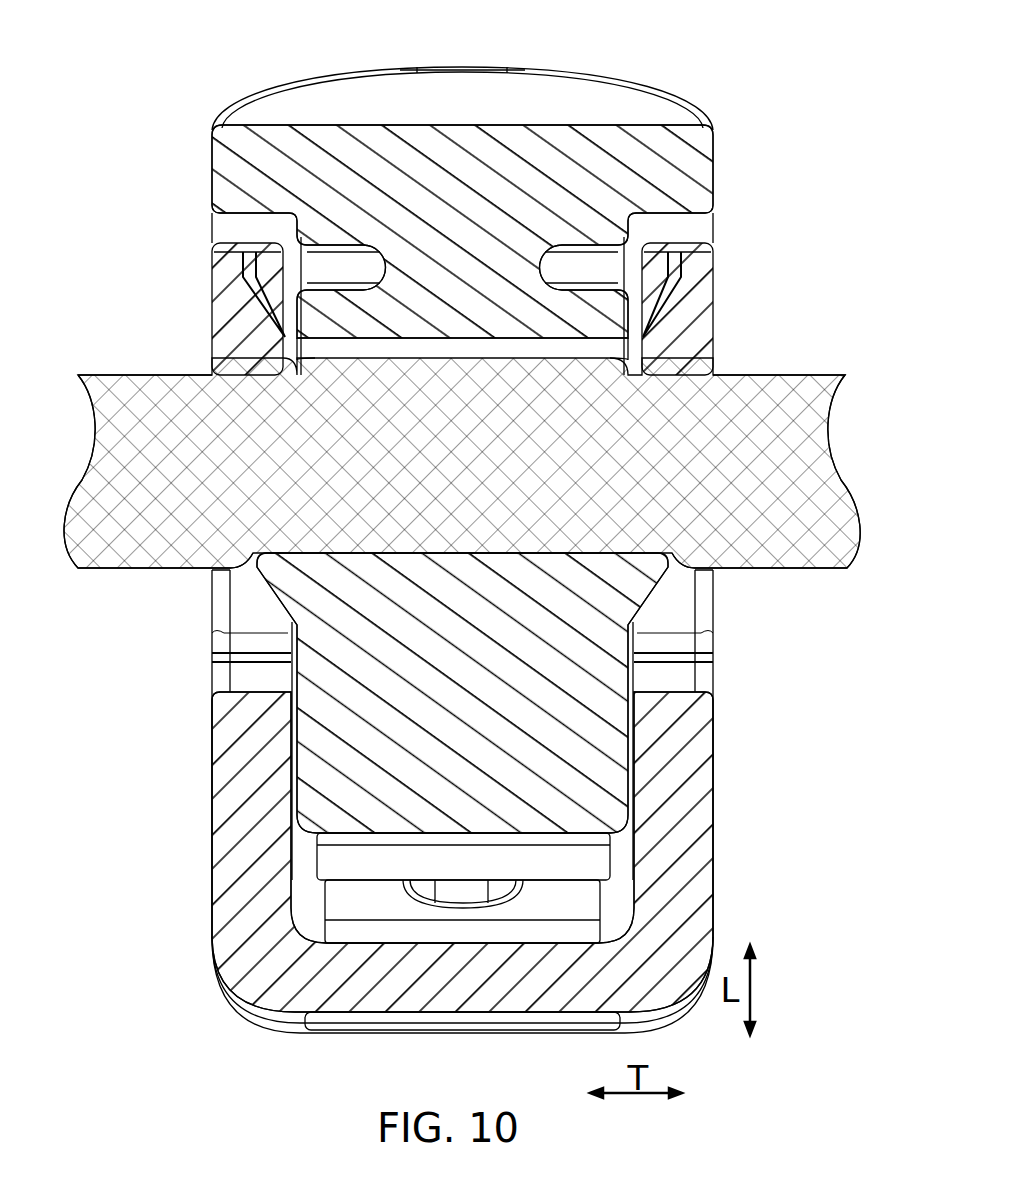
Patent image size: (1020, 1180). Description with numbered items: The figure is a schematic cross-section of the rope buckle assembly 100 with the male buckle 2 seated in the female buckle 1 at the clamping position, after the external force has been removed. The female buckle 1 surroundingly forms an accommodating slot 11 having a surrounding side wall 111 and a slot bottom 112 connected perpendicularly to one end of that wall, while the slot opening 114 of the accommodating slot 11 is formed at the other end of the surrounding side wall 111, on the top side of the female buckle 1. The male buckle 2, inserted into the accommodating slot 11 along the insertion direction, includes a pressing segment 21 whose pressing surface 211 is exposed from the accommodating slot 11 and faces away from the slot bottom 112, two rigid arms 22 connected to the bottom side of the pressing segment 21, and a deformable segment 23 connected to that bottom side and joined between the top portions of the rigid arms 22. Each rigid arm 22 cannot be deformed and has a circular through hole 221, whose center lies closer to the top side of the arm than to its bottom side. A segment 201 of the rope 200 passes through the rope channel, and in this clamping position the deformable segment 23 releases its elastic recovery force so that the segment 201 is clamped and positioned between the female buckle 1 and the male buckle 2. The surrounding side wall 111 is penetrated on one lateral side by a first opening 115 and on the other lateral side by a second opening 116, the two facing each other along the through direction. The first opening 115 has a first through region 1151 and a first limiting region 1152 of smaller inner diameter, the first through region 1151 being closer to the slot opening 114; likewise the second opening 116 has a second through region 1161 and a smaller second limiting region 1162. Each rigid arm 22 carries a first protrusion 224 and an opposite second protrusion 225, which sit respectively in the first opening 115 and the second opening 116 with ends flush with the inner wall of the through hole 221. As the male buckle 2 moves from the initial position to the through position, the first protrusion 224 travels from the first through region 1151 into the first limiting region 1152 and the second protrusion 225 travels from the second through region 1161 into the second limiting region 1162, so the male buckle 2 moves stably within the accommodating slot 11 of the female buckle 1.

The rope buckle assembly 100 is at (643, 58).
The male buckle 2 is at (196, 157).
The pressing segment 21 is at (714, 178).
The pressing surface 211 is at (313, 122).
The segment of rope 201 is at (428, 388).
The slot opening 114 is at (288, 238).
The rigid arm 22 is at (300, 318).
The deformable segment 23 is at (548, 258).
The through hole 221 is at (606, 346).
The rope 200 is at (115, 370).
The first protrusion 224 is at (637, 582).
The second protrusion 225 is at (288, 582).
The female buckle 1 is at (205, 883).
The accommodating slot 11 is at (634, 886).
The surrounding side wall 111 is at (203, 807).
The slot bottom 112 is at (368, 1017).
The first opening 115 is at (818, 580).
The first through region 1151 is at (714, 592).
The first limiting region 1152 is at (714, 682).
The second opening 116 is at (108, 580).
The second through region 1161 is at (210, 592).
The second limiting region 1162 is at (210, 682).